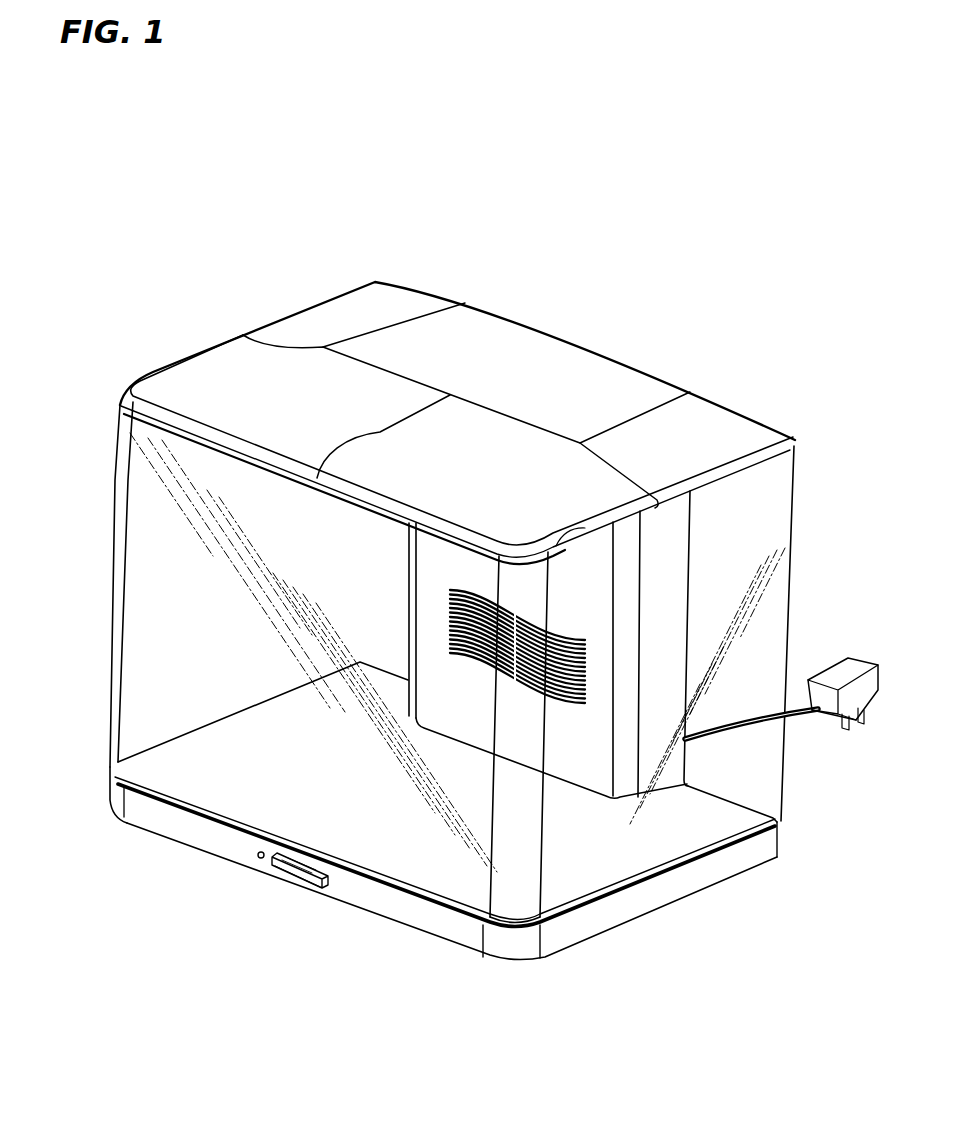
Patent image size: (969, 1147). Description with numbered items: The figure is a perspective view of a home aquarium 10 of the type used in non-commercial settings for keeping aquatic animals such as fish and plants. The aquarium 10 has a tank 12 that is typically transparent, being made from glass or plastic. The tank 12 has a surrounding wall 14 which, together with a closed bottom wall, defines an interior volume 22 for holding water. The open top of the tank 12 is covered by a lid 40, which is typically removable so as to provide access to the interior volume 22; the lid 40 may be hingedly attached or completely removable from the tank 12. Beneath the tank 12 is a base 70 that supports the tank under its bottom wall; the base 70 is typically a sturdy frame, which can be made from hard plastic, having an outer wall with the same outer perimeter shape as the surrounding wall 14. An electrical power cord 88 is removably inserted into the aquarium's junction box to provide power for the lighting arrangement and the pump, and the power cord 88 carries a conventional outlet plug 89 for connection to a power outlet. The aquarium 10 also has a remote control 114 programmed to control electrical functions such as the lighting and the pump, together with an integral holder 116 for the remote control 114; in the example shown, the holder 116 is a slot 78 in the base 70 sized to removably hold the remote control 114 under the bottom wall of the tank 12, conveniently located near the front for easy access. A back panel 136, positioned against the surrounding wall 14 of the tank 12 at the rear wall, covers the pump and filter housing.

The aquarium 10 is at (575, 288).
The tank 12 is at (105, 530).
The surrounding wall 14 is at (117, 597).
The interior volume 22 is at (156, 665).
The lid 40 is at (630, 377).
The base 70 is at (605, 915).
The slot 78 is at (330, 886).
The electrical power cord 88 is at (803, 723).
The outlet plug 89 is at (842, 662).
The remote control 114 is at (283, 873).
The holder 116 is at (289, 888).
The back panel 136 is at (413, 572).